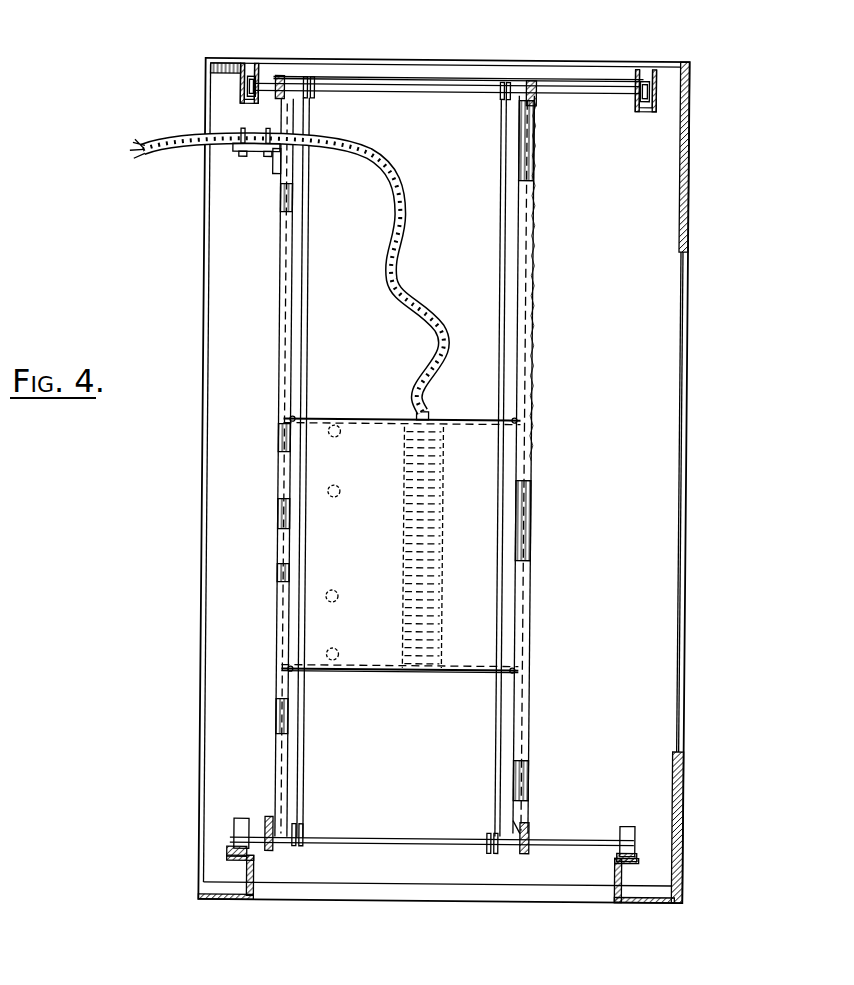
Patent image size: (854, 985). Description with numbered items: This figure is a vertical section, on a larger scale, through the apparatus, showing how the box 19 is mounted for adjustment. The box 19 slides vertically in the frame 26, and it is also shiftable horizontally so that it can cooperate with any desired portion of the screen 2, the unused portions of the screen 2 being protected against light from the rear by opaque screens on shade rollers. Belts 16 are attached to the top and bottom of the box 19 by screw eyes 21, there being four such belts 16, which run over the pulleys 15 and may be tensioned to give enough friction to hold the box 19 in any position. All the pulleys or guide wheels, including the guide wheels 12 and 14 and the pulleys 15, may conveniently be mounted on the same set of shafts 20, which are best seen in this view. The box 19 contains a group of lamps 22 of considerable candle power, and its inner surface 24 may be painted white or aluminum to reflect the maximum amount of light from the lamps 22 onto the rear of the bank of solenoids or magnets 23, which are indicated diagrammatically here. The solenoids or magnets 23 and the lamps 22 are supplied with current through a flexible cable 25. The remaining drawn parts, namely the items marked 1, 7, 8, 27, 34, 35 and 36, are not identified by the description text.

The housing frame 1 is at (688, 181).
The screen 2 is at (686, 586).
The lower bracket 7 is at (253, 862).
The upper bracket 8 is at (240, 98).
The pulley or guide wheel 12 is at (244, 820).
The pulley or guide wheel 14 is at (256, 78).
The pulley 15 is at (315, 96).
The belt 16 is at (306, 320).
The box 19 is at (376, 428).
The shaft 20 is at (450, 97).
The screw eye 21 is at (295, 420).
The lamp 22 is at (336, 499).
The solenoid or magnet 23 is at (444, 492).
The inner surface 24 is at (397, 673).
The flexible cable 25 is at (392, 250).
The frame 26 is at (283, 632).
The toothed rack 27 is at (534, 212).
The bottom wall 34 is at (432, 905).
The top wall 35 is at (425, 66).
The left wall 36 is at (202, 597).